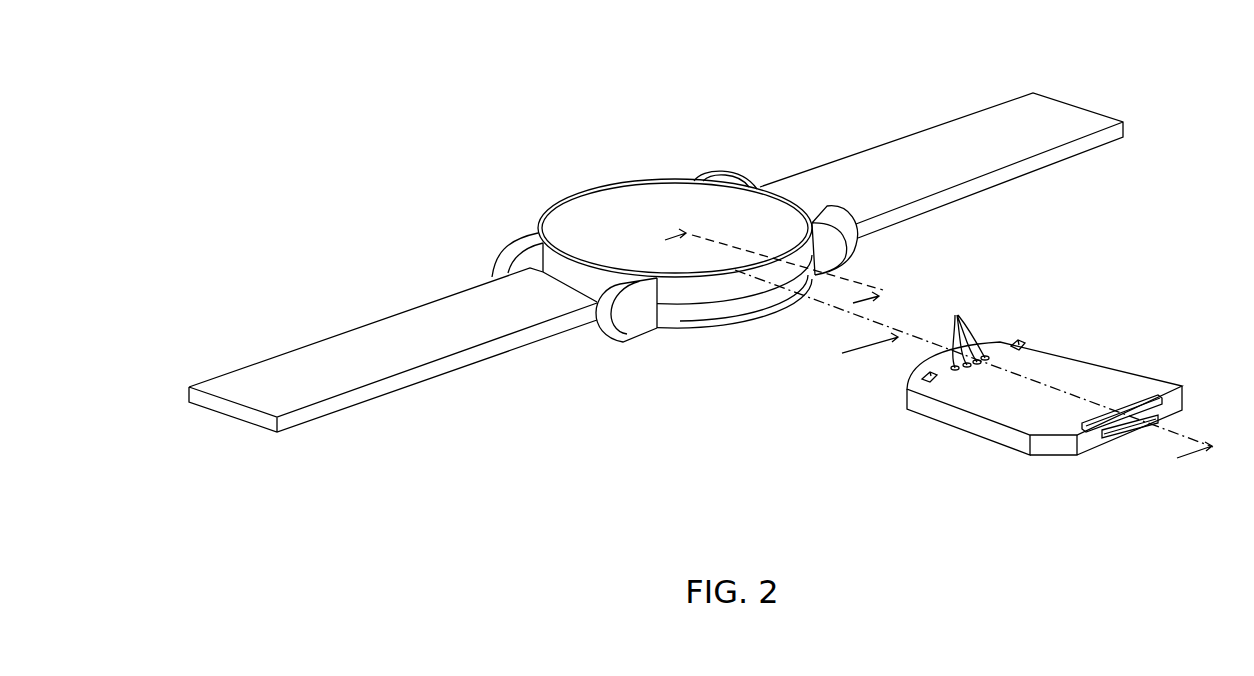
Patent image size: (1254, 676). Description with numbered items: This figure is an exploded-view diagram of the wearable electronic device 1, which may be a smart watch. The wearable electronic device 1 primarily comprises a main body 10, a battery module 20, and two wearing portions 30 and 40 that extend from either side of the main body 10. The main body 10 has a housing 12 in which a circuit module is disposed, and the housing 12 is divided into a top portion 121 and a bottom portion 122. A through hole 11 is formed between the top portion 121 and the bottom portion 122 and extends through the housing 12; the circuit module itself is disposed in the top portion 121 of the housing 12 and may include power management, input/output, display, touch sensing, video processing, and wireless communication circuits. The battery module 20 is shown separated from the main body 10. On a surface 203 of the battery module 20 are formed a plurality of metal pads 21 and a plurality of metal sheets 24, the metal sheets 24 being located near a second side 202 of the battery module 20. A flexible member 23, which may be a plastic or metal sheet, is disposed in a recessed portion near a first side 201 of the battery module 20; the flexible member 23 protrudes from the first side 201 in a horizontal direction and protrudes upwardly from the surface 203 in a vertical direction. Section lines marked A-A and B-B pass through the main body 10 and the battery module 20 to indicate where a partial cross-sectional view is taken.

The wearable electronic device 1 is at (311, 62).
The main body 10 is at (675, 269).
The through hole 11 is at (677, 316).
The housing 12 is at (734, 340).
The top portion 121 is at (706, 291).
The bottom portion 122 is at (686, 389).
The battery module 20 is at (1009, 389).
The first side 201 is at (1088, 443).
The second side 202 is at (908, 400).
The surface 203 is at (1055, 365).
The metal pads 21 is at (964, 329).
The flexible member 23 is at (1150, 400).
The metal sheets 24 is at (1019, 343).
The wearing portion 30 is at (905, 157).
The wearing portion 40 is at (368, 343).